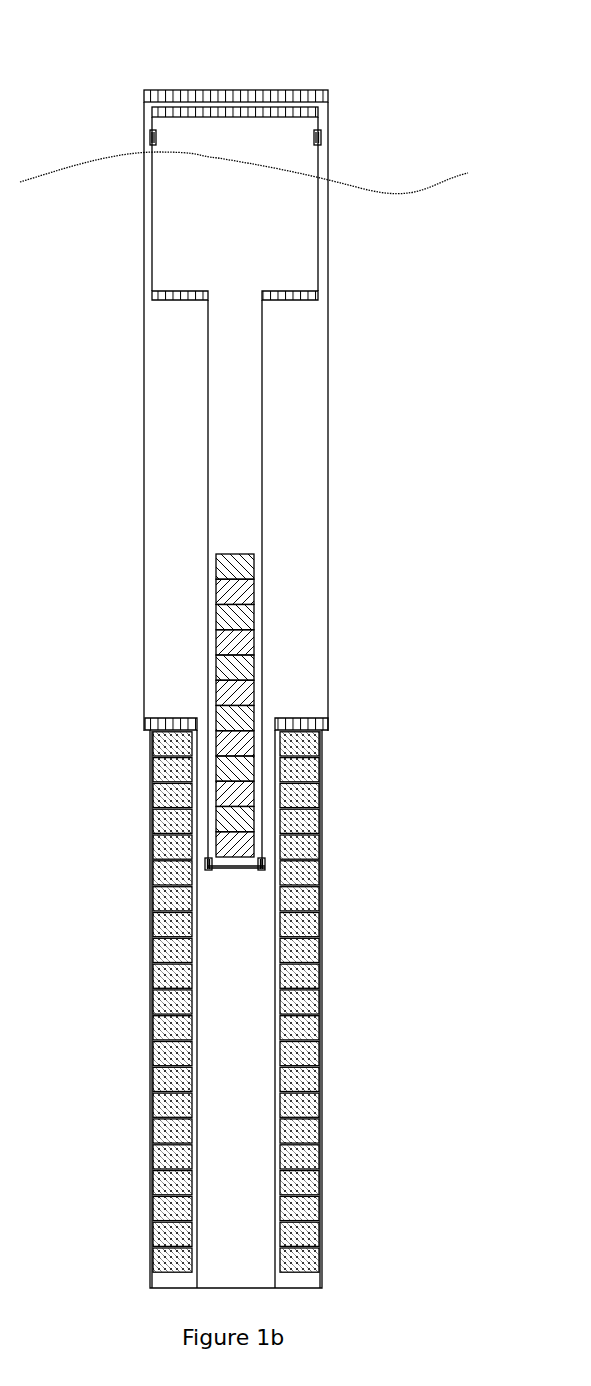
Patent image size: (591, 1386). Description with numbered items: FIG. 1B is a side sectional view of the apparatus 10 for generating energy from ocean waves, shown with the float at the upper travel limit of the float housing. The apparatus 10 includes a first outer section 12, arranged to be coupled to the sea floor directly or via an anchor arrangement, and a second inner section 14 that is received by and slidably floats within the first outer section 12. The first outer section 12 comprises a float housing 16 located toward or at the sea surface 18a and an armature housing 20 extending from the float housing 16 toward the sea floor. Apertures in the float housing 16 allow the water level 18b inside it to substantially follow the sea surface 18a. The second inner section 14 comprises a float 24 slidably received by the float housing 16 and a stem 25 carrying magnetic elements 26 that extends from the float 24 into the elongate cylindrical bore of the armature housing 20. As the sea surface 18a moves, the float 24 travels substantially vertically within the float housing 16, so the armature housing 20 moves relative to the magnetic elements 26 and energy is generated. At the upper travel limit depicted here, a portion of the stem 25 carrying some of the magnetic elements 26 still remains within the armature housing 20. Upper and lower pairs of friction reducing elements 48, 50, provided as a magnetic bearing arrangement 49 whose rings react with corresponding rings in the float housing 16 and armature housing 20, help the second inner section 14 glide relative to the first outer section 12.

The apparatus 10 is at (88, 418).
The first outer section 12 is at (327, 460).
The second inner section 14 is at (270, 256).
The float housing 16 is at (328, 390).
The sea surface 18a is at (390, 187).
The water level 18b is at (218, 158).
The armature housing 20 is at (323, 863).
The float 24 is at (196, 200).
The stem 25 is at (239, 542).
The magnetic elements 26 is at (228, 804).
The upper friction reducing elements 48 is at (318, 135).
The magnetic bearing arrangement 49 is at (265, 868).
The lower friction reducing elements 50 is at (265, 868).